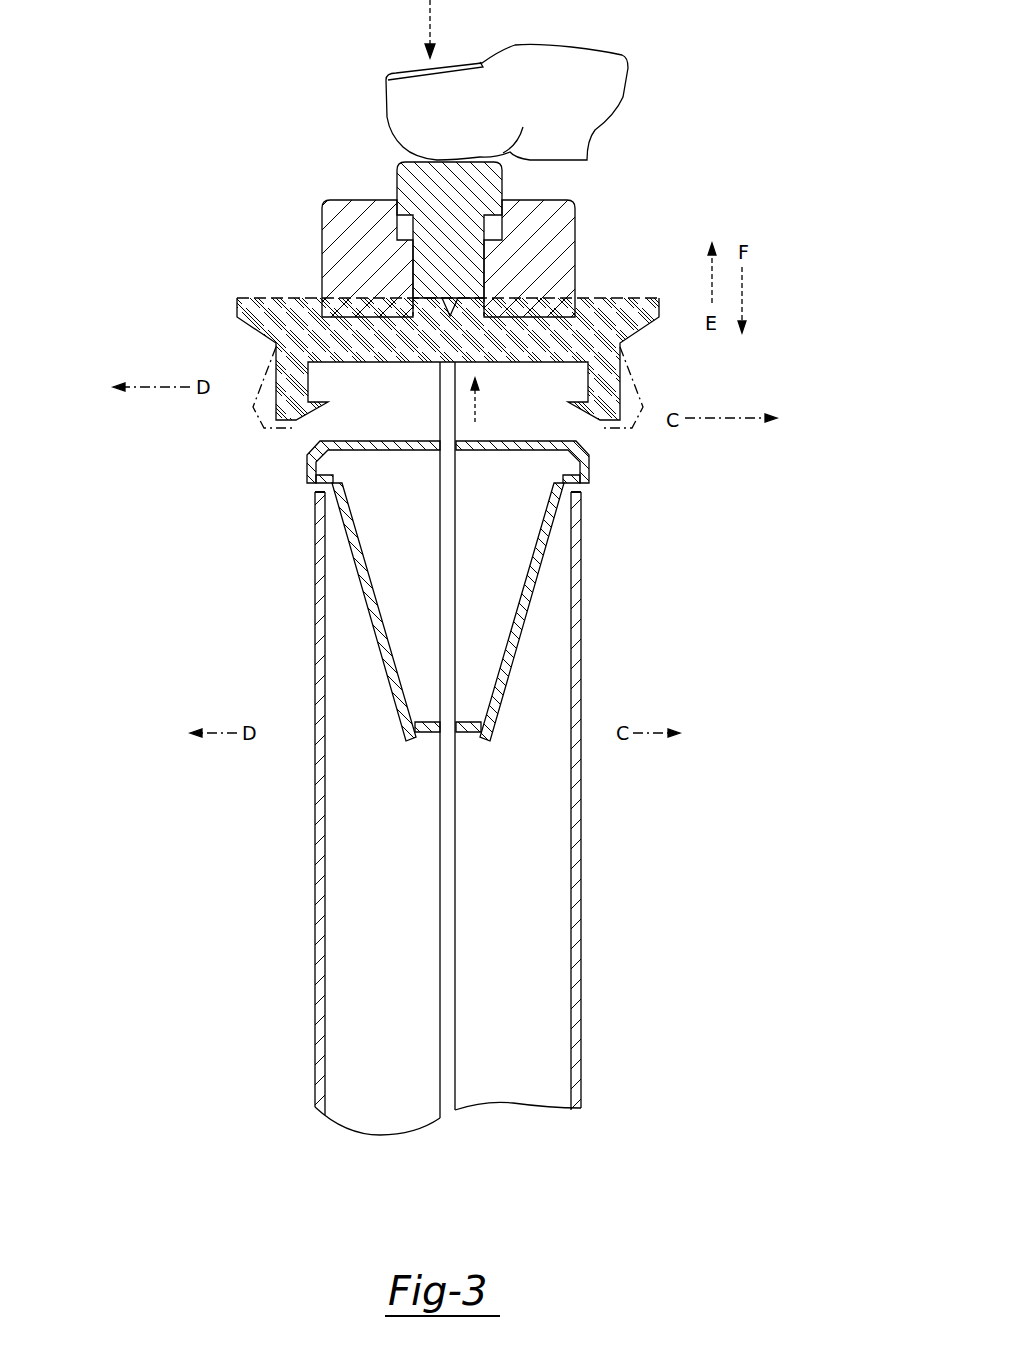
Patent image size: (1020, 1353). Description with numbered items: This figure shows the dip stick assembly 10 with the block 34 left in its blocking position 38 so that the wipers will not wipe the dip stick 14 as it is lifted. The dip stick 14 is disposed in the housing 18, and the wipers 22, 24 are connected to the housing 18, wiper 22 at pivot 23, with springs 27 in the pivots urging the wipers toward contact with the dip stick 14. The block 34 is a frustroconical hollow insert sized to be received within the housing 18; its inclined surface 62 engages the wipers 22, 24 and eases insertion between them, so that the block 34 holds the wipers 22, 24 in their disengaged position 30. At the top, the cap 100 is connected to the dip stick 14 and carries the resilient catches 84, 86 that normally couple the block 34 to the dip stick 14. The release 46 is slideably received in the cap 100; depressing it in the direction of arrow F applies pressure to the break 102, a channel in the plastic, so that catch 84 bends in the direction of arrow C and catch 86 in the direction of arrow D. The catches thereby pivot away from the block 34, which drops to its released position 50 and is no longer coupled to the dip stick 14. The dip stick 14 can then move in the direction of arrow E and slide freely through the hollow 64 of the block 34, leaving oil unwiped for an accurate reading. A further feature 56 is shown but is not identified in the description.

The dip stick assembly 10 is at (657, 227).
The dip stick 14 is at (455, 970).
The housing 18 is at (580, 957).
The wiper 22 is at (380, 653).
The pivot 23 is at (323, 497).
The wiper 24 is at (512, 645).
The springs 27 is at (337, 485).
The disengaged position 30 is at (365, 785).
The block 34 is at (517, 583).
The blocking position 38 is at (260, 608).
The release 46 is at (395, 188).
The released position 50 is at (187, 342).
The resilient arm 56 is at (320, 432).
The inclined surface 62 is at (382, 598).
The hollow 64 is at (382, 617).
The catch 84 is at (595, 418).
The catch 86 is at (293, 425).
The cap 100 is at (597, 273).
The break 102 is at (440, 318).